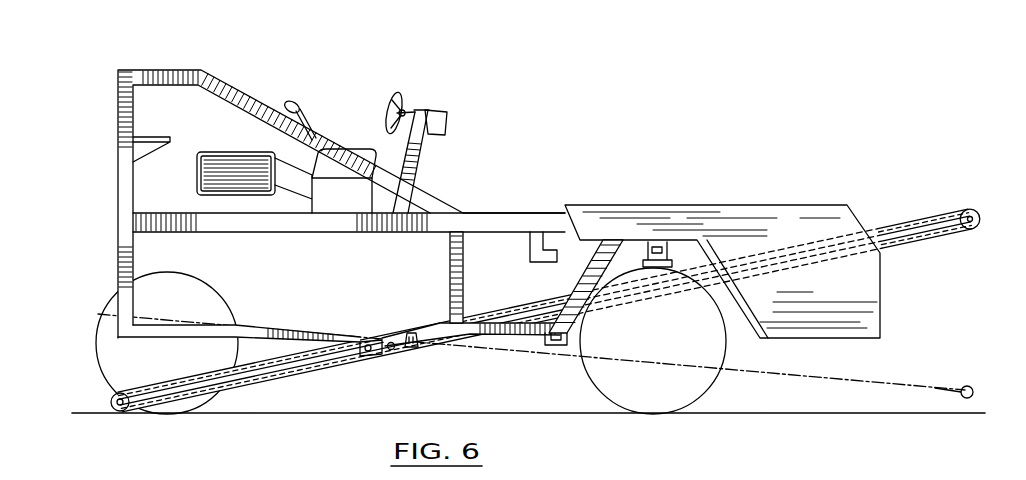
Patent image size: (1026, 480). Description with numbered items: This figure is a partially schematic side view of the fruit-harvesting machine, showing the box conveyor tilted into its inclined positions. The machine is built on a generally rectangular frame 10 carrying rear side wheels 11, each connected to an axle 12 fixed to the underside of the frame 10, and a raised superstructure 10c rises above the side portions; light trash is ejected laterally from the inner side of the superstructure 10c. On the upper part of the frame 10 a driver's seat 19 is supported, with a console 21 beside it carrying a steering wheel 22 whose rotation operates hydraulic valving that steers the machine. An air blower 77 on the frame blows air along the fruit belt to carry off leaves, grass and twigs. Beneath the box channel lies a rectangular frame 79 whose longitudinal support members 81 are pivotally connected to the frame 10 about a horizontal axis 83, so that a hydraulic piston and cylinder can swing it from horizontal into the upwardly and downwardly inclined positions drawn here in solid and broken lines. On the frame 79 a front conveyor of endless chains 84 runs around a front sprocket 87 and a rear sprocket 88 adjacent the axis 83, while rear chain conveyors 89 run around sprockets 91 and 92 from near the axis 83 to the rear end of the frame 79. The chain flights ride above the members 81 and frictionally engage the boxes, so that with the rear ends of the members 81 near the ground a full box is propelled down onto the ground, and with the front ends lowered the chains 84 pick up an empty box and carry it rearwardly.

The frame 10 is at (508, 212).
The raised superstructure 10c is at (215, 72).
The air blower 77 is at (233, 152).
The driver's seat 19 is at (303, 106).
The steering wheel 22 is at (399, 95).
The console 21 is at (418, 140).
The rear side wheel 11 is at (110, 357).
The axle 12 is at (710, 343).
The rear chain conveyor 89 is at (258, 385).
The sprocket 92 is at (112, 401).
The front sprocket 87 is at (979, 213).
The longitudinal support member 81 is at (884, 236).
The endless chain 84 is at (929, 242).
The rectangular frame 79 is at (917, 214).
The sprocket 91 is at (368, 356).
The horizontal axis 83 is at (391, 351).
The rear sprocket 88 is at (412, 352).